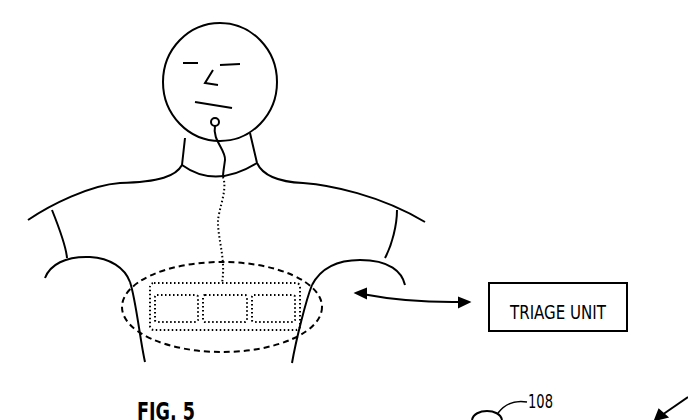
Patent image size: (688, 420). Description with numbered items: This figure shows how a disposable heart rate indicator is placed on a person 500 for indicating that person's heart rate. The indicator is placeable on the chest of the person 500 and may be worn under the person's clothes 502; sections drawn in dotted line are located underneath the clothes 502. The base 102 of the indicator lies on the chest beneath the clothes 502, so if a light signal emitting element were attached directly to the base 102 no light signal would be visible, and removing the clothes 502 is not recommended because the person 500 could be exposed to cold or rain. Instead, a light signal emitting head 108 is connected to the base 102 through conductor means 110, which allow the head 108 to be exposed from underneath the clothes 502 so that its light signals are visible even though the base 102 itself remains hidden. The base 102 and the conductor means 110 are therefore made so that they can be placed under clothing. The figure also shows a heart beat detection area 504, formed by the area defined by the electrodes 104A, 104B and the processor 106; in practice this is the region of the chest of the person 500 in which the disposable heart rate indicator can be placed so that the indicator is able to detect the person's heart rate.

The person 500 is at (268, 57).
The clothes 502 is at (358, 191).
The light signal emitting head 108 is at (219, 121).
The conductor means 110 is at (223, 228).
The base 102 is at (192, 283).
The heart beat detection area 504 is at (273, 345).
The electrode 104A is at (176, 308).
The processor 106 is at (225, 308).
The electrode 104B is at (273, 308).